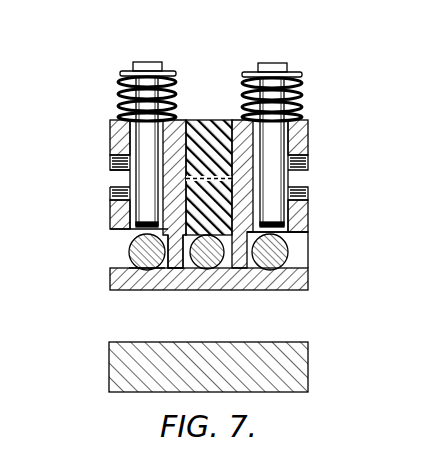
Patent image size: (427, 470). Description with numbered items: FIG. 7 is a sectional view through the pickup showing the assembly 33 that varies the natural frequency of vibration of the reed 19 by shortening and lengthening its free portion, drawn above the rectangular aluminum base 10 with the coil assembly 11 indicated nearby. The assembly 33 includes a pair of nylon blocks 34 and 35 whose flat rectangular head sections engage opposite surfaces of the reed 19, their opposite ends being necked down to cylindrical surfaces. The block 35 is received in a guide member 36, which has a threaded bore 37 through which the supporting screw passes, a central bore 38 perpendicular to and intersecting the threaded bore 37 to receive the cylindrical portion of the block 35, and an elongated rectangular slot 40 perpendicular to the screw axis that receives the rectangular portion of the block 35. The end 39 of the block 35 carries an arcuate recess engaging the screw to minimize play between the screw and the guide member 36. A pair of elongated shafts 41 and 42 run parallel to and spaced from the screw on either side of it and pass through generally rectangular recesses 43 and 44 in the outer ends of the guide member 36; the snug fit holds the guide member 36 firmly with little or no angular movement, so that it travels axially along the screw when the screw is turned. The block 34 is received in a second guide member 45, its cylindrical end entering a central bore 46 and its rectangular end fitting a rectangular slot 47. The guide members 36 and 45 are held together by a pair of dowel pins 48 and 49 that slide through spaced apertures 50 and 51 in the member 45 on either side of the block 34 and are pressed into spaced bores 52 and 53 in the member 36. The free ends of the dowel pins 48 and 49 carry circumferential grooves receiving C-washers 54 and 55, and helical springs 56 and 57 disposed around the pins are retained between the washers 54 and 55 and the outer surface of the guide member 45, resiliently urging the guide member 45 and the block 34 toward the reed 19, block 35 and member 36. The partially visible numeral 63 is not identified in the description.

The base 10 is at (308, 363).
The coil assembly 11 is at (426, 24).
The reed 19 is at (163, 179).
The assembly 33 is at (320, 107).
The nylon block 34 is at (203, 121).
The nylon block 35 is at (283, 220).
The guide member 36 is at (268, 278).
The threaded bore 37 is at (213, 272).
The central bore 38 is at (170, 268).
The end of block 39 is at (176, 270).
The rectangular slot 40 is at (110, 192).
The shaft 41 is at (129, 252).
The shaft 42 is at (290, 254).
The recess 43 is at (113, 232).
The recess 44 is at (285, 270).
The second guide member 45 is at (308, 148).
The central bore 46 is at (192, 120).
The rectangular slot 47 is at (110, 162).
The dowel pin 48 is at (156, 62).
The dowel pin 49 is at (272, 63).
The aperture 50 is at (118, 119).
The aperture 51 is at (308, 128).
The bore 52 is at (112, 210).
The bore 53 is at (308, 208).
The C-washer 54 is at (130, 72).
The C-washer 55 is at (296, 73).
The helical spring 56 is at (124, 88).
The helical spring 57 is at (300, 92).
The element 63 is at (419, 155).